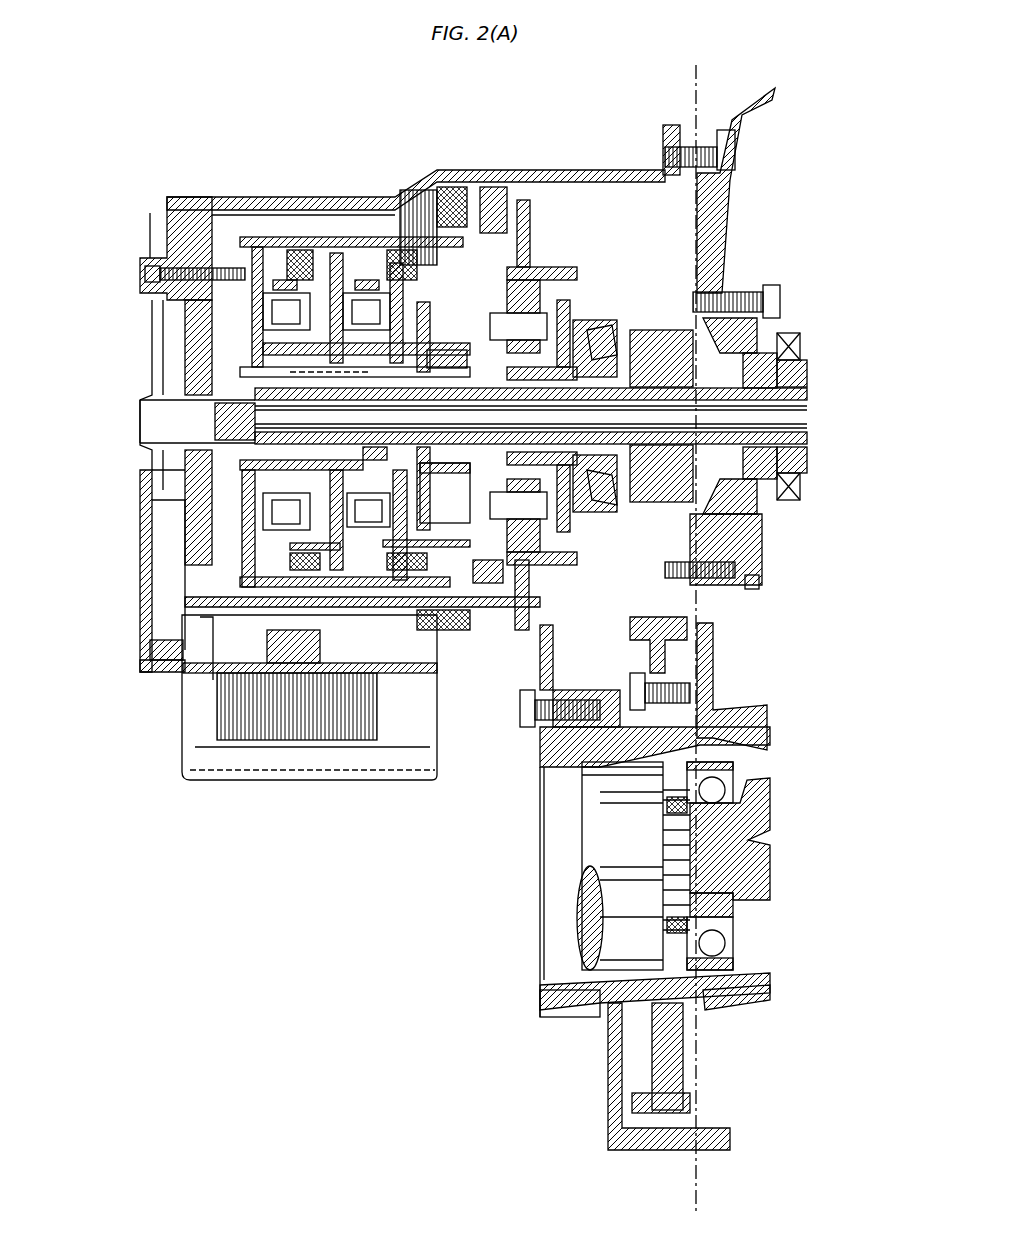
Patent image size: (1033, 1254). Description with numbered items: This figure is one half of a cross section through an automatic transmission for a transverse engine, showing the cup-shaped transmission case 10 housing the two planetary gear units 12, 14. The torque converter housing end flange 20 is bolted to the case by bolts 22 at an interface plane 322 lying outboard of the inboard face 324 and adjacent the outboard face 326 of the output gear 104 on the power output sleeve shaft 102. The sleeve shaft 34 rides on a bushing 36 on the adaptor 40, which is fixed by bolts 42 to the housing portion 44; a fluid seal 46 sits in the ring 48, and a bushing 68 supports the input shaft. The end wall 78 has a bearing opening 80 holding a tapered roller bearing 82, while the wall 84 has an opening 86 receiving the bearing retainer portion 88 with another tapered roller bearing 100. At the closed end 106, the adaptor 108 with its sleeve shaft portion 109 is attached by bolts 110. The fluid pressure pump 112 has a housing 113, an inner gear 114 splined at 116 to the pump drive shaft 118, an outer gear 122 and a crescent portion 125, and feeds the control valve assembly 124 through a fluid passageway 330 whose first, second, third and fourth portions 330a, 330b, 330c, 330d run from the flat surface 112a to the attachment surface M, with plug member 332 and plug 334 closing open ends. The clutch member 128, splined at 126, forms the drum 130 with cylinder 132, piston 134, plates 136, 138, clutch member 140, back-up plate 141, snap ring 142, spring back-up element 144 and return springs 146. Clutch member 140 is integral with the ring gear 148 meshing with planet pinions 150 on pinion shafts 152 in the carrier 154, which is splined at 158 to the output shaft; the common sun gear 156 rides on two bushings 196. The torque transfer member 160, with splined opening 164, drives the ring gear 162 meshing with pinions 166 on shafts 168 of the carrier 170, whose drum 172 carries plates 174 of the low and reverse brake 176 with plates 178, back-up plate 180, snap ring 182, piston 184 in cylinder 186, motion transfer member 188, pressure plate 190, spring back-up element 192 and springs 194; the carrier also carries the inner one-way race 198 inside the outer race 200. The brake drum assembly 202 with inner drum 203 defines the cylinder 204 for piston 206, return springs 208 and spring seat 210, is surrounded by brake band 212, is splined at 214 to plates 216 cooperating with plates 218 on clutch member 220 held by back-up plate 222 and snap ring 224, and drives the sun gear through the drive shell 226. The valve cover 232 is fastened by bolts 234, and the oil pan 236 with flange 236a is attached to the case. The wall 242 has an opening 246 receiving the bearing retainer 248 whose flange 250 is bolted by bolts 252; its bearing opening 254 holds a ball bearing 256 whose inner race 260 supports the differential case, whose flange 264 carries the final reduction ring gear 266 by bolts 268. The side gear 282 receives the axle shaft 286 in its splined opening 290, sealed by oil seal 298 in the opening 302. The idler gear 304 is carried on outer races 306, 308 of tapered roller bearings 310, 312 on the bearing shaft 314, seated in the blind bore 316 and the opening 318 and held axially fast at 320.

The transmission case 10 is at (630, 163).
The planetary gear unit 12 is at (535, 270).
The planetary gear unit 14 is at (530, 200).
The end flange 20 is at (710, 128).
The bolts 22 is at (735, 150).
The sleeve shaft 34 is at (805, 372).
The bushing 36 is at (808, 380).
The adaptor 40 is at (750, 290).
The bolts 42 is at (775, 305).
The housing portion 44 is at (640, 335).
The fluid seal 46 is at (805, 460).
The ring 48 is at (800, 490).
The bushing 68 is at (807, 395).
The end wall 78 is at (598, 335).
The bearing opening 80 is at (640, 320).
The tapered roller bearing 82 is at (628, 320).
The wall 84 is at (720, 300).
The opening 86 is at (762, 330).
The bearing retainer portion 88 is at (770, 340).
The tapered roller bearing 100 is at (800, 350).
The power output sleeve shaft 102 is at (595, 345).
The output gear 104 is at (716, 290).
The end closure wall 106 is at (160, 260).
The adaptor 108 is at (170, 235).
The sleeve shaft portion 109 is at (210, 440).
The bolts 110 is at (240, 215).
The fluid pressure pump 112 is at (215, 350).
The flat surface 112a is at (175, 470).
The pump housing 113 is at (200, 370).
The pump inner gear 114 is at (225, 375).
The spline 116 is at (160, 410).
The pump drive shaft 118 is at (205, 428).
The pump outer gear 122 is at (195, 310).
The control valve assembly 124 is at (205, 715).
The crescent portion 125 is at (200, 330).
The spline 126 is at (440, 475).
The clutch member 128 is at (400, 215).
The drum 130 is at (380, 225).
The cylinder 132 is at (430, 640).
The annular piston 134 is at (330, 205).
The clutch plates 136 is at (395, 235).
The clutch plates 138 is at (385, 230).
The clutch member 140 is at (380, 210).
The clutch back-up plate 141 is at (435, 215).
The snap ring 142 is at (490, 205).
The spring back-up element 144 is at (345, 205).
The piston return springs 146 is at (340, 210).
The ring gear 148 is at (430, 210).
The planet pinions 150 is at (530, 265).
The pinion shafts 152 is at (540, 290).
The planetary carrier 154 is at (420, 195).
The sun gear 156 is at (545, 340).
The spline 158 is at (520, 480).
The torque transfer member 160 is at (580, 335).
The ring gear 162 is at (600, 176).
The splined central opening 164 is at (550, 640).
The planetary pinions 166 is at (580, 320).
The pinion shafts 168 is at (590, 330).
The carrier 170 is at (540, 205).
The drum 172 is at (495, 210).
The brake plates 174 is at (445, 200).
The low and reverse brake 176 is at (450, 195).
The brake plates 178 is at (428, 195).
The brake back-up plate 180 is at (480, 195).
The snap ring 182 is at (480, 200).
The piston 184 is at (210, 228).
The cylinder 186 is at (160, 600).
The motion transfer member 188 is at (355, 225).
The pressure plate 190 is at (445, 620).
The spring back-up element 192 is at (210, 215).
The piston return springs 194 is at (215, 225).
The bushings 196 is at (470, 340).
The inner one-way clutch race 198 is at (545, 205).
The outer race 200 is at (520, 195).
The brake drum assembly 202 is at (250, 235).
The inner drum 203 is at (290, 635).
The annular cylinder 204 is at (150, 580).
The annular piston 206 is at (225, 525).
The piston return springs 208 is at (185, 500).
The spring seat member 210 is at (230, 540).
The intermediate speed ratio brake band 212 is at (245, 225).
The spline 214 is at (340, 235).
The clutch plates 216 is at (300, 240).
The clutch plates 218 is at (290, 240).
The clutch member 220 is at (280, 205).
The clutch pressure back-up plate 222 is at (285, 228).
The snap ring 224 is at (320, 610).
The drive shell 226 is at (520, 560).
The valve cover 232 is at (262, 750).
The bolts 234 is at (215, 775).
The oil pan 236 is at (330, 772).
The flange portion 236a is at (170, 680).
The wall 242 is at (560, 755).
The opening 246 is at (560, 990).
The bearing retainer 248 is at (580, 755).
The flange 250 is at (540, 1005).
The bolts 252 is at (520, 710).
The bearing opening 254 is at (740, 965).
The ball bearing 256 is at (740, 943).
The inner race 260 is at (770, 920).
The flange 264 is at (655, 1040).
The final reduction ring gear 266 is at (650, 1080).
The bolts 268 is at (700, 670).
The side gear 282 is at (772, 830).
The axle shaft 286 is at (620, 860).
The splined opening 290 is at (772, 855).
The oil seal 298 is at (620, 925).
The opening 302 is at (670, 820).
The idler gear 304 is at (760, 565).
The outer race 306 is at (762, 535).
The outer race 308 is at (700, 580).
The tapered roller bearing 310 is at (740, 545).
The tapered roller bearing 312 is at (690, 620).
The bearing shaft 314 is at (700, 560).
The blind bore 316 is at (760, 585).
The opening 318 is at (655, 560).
The axial fastening means 320 is at (600, 600).
The interface plane 322 is at (700, 82).
The inboard face 324 is at (807, 414).
The outboard face 326 is at (805, 438).
The fluid passageway 330 is at (150, 500).
The first portion 330a is at (150, 520).
The second portion 330b is at (148, 630).
The third portion 330c is at (170, 690).
The fourth portion 330d is at (195, 700).
The plug member 332 is at (150, 670).
The plug 334 is at (150, 650).
The attachment flat surface M is at (185, 685).